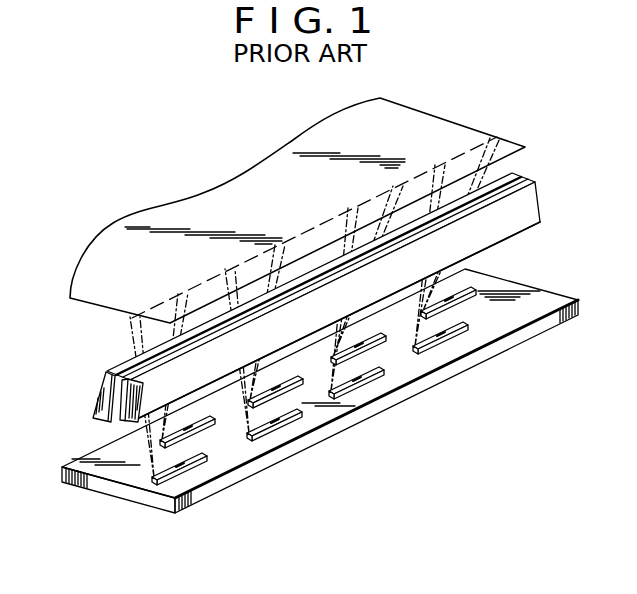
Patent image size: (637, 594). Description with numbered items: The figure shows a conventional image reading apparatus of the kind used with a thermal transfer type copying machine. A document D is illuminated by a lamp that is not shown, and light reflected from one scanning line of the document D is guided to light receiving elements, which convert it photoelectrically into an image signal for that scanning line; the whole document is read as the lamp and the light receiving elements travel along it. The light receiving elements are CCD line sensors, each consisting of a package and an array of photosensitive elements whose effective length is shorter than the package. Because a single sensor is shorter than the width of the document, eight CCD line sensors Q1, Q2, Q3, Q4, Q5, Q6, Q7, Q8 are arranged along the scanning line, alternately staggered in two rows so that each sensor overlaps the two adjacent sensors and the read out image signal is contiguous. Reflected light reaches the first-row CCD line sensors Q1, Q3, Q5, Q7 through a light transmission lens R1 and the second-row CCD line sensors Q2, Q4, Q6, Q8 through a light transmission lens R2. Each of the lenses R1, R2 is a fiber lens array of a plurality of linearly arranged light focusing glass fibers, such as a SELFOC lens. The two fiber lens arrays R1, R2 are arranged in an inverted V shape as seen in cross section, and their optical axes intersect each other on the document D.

The document D is at (439, 129).
The light transmission lens R1 is at (538, 206).
The light transmission lens R2 is at (98, 397).
The CCD line sensor Q1 is at (190, 467).
The CCD line sensor Q2 is at (207, 423).
The CCD line sensor Q3 is at (268, 421).
The CCD line sensor Q4 is at (296, 388).
The CCD line sensor Q5 is at (369, 383).
The CCD line sensor Q6 is at (385, 347).
The CCD line sensor Q7 is at (453, 341).
The CCD line sensor Q8 is at (478, 301).